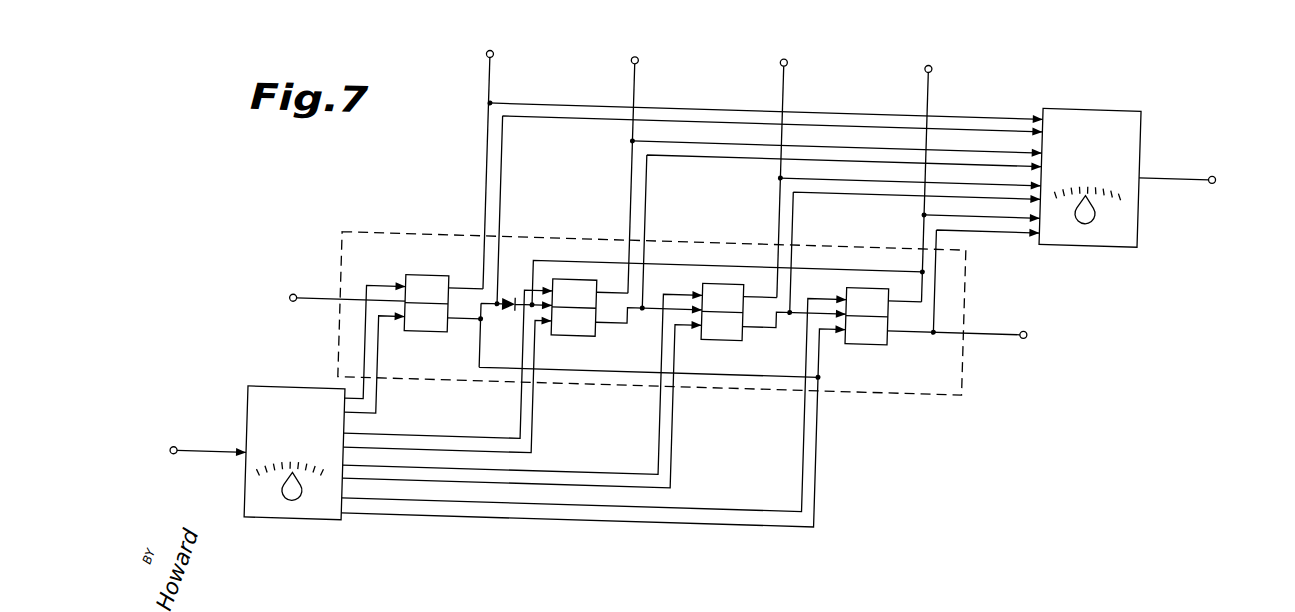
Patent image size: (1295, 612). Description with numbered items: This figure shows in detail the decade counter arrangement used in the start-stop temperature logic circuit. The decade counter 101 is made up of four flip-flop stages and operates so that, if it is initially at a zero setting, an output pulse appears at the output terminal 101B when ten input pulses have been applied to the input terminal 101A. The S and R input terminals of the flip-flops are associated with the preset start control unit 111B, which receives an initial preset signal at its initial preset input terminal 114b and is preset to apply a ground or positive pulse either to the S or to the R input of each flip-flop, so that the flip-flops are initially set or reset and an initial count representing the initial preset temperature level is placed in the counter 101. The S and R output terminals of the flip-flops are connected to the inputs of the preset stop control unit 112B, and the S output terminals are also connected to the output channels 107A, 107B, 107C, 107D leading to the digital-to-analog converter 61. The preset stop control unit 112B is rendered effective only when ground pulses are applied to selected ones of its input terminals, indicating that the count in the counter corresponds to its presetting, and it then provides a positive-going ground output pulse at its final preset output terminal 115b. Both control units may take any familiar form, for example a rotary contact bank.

The digital-to-analog converter 61 is at (722, 42).
The output channel 107A is at (509, 170).
The output channel 107B is at (654, 176).
The output channel 107C is at (804, 179).
The output channel 107D is at (949, 184).
The preset stop control unit 112B is at (1087, 92).
The output terminal 115b is at (1214, 155).
The decade counter 101 is at (970, 354).
The input terminal 101A is at (299, 307).
The output terminal 101B is at (1030, 316).
The preset start control unit 111B is at (304, 524).
The initial preset input terminal 114b is at (188, 456).